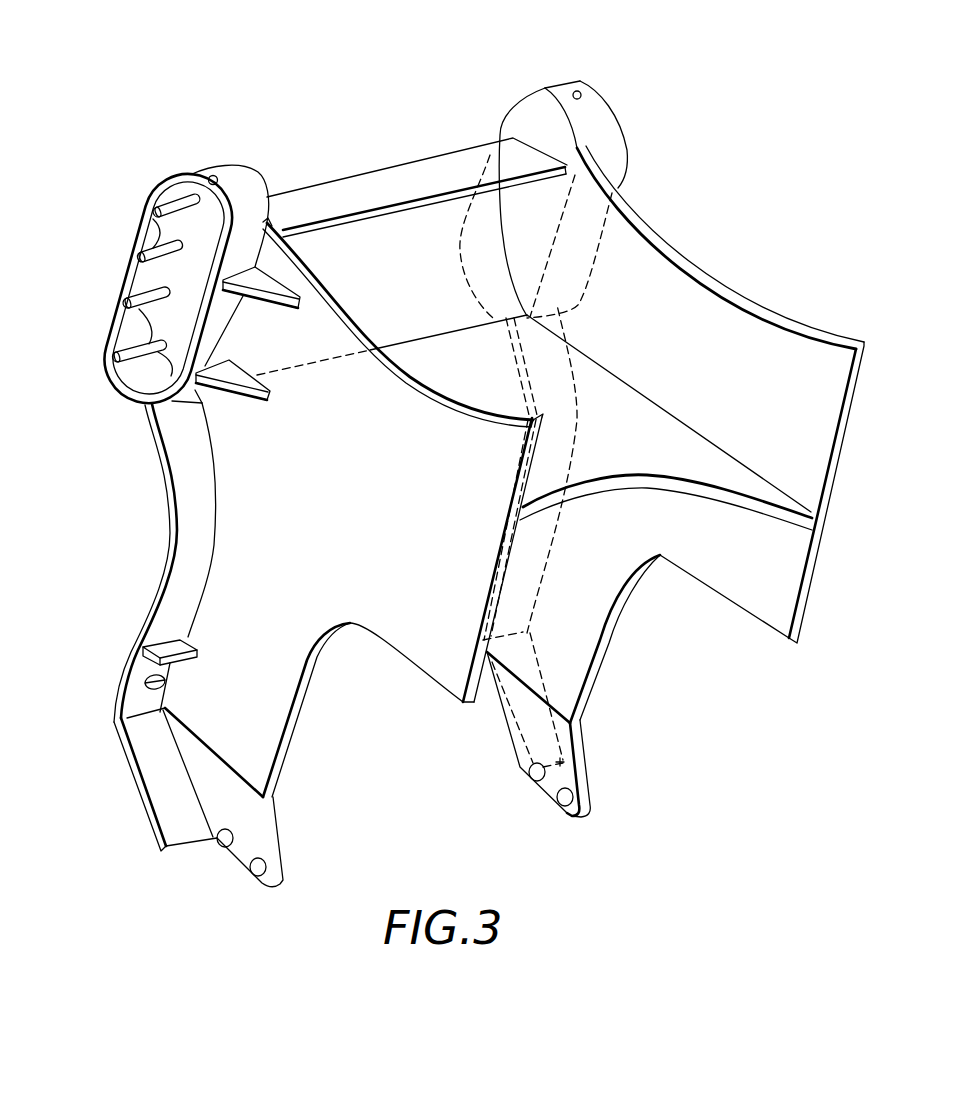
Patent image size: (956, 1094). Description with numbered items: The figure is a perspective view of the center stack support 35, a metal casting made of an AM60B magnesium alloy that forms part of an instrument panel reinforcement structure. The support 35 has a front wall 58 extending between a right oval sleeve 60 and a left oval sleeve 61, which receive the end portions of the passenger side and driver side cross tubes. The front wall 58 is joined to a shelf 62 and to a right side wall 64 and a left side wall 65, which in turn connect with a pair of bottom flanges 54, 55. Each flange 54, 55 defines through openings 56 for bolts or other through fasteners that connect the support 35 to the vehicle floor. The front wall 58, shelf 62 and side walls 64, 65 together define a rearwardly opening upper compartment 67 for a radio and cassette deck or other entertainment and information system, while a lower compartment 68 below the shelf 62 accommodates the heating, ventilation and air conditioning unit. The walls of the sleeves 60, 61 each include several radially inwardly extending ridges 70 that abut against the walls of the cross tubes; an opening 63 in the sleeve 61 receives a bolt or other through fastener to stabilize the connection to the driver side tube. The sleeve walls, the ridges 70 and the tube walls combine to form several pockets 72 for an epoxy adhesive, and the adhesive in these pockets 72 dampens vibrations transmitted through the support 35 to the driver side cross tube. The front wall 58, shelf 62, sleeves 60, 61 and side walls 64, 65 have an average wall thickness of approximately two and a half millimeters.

The center stack support 35 is at (350, 66).
The bottom flange 54 is at (563, 767).
The bottom flange 55 is at (248, 815).
The through openings 56 is at (257, 872).
The front wall 58 is at (372, 243).
The right oval sleeve 60 is at (574, 81).
The left oval sleeve 61 is at (203, 165).
The shelf 62 is at (694, 482).
The opening 63 is at (224, 168).
The right side wall 64 is at (741, 331).
The left side wall 65 is at (426, 628).
The upper compartment 67 is at (612, 386).
The lower compartment 68 is at (545, 552).
The ridges 70 is at (135, 303).
The pockets 72 is at (162, 226).